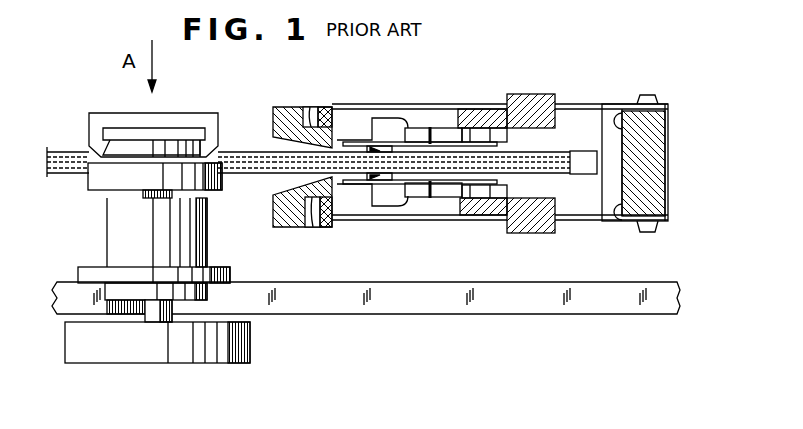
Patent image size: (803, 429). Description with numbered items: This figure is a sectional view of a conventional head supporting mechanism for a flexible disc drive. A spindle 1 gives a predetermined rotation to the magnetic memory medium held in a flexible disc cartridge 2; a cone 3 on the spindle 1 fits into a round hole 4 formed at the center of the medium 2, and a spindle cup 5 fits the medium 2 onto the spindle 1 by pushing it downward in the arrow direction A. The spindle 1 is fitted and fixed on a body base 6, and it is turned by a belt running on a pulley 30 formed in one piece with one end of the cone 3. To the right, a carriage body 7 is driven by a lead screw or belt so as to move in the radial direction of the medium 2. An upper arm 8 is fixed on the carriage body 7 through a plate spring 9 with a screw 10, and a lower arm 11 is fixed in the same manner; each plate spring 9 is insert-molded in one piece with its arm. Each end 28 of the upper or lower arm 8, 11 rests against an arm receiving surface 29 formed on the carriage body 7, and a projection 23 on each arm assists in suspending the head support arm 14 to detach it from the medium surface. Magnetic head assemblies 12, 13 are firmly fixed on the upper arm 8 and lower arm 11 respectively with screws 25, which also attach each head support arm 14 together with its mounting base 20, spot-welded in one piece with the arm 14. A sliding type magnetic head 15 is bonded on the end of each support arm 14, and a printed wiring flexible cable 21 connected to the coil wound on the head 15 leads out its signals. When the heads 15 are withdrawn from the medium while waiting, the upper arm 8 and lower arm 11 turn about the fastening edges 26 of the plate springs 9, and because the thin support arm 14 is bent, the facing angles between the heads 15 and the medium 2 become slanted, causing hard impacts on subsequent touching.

The spindle 1 is at (125, 232).
The flexible disc cartridge 2 is at (592, 152).
The cone 3 is at (200, 147).
The round hole 4 is at (192, 158).
The spindle cup 5 is at (113, 112).
The body base 6 is at (518, 315).
The carriage body 7 is at (288, 107).
The upper arm 8 is at (366, 106).
The plate spring 9 is at (572, 104).
The screw 10 is at (646, 95).
The lower arm 11 is at (372, 205).
The magnetic head assembly 12 is at (435, 142).
The magnetic head assembly 13 is at (392, 206).
The head support arm 14 is at (492, 134).
The sliding type magnetic head 15 is at (378, 148).
The mounting base 20 is at (527, 94).
The printed wiring flexible cable 21 is at (455, 135).
The projection 23 is at (450, 248).
The screw 25 is at (475, 150).
The fastening edge 26 is at (623, 133).
The arm end 28 is at (325, 107).
The arm receiving surface 29 is at (312, 107).
The pulley 30 is at (172, 363).